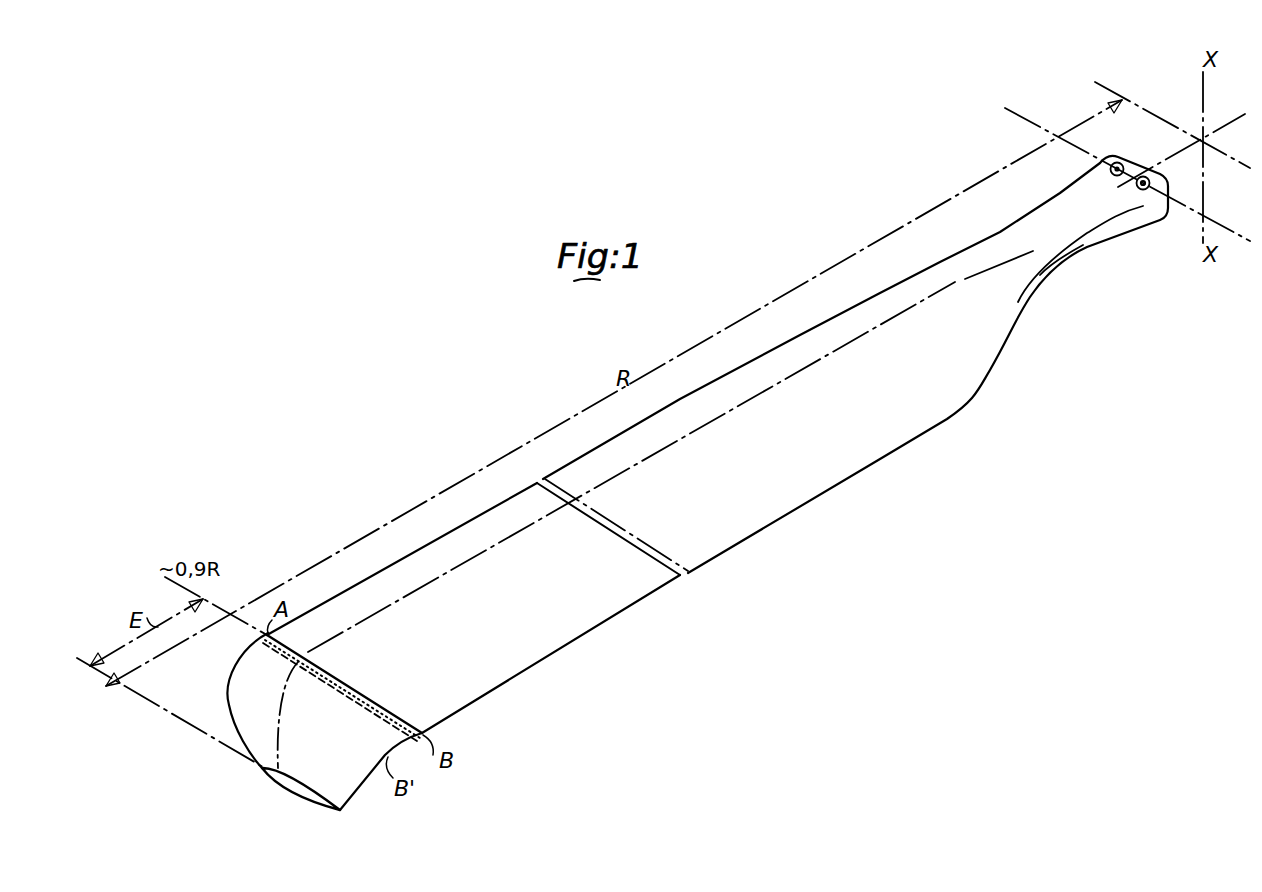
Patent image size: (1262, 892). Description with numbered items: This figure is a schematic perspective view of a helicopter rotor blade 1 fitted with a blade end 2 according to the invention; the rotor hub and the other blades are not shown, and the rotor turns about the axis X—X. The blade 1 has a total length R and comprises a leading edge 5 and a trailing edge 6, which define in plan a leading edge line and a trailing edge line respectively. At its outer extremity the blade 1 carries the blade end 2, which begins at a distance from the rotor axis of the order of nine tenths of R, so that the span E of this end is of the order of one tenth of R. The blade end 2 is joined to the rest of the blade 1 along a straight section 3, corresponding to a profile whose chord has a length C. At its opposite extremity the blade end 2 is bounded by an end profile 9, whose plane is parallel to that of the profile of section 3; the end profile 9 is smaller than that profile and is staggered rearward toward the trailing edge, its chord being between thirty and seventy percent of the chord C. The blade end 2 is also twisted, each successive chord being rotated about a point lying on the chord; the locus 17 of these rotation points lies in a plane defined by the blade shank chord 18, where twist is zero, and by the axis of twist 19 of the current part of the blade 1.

The blade 1 is at (787, 500).
The blade end 2 is at (305, 735).
The straight section 3 is at (377, 692).
The leading edge 5 is at (445, 530).
The trailing edge 6 is at (618, 615).
The end profile 9 is at (300, 793).
The locus 17 is at (283, 705).
The blade shank chord 18 is at (1005, 110).
The axis of twist 19 is at (488, 553).